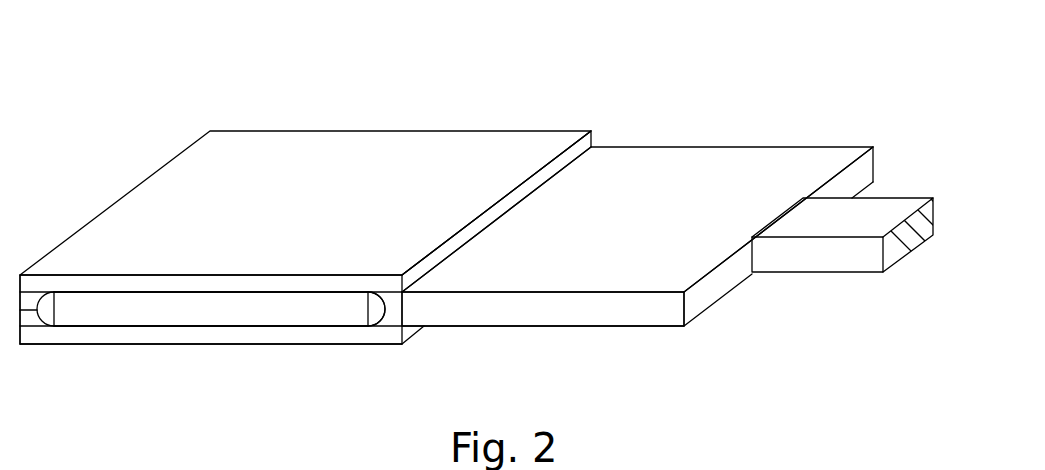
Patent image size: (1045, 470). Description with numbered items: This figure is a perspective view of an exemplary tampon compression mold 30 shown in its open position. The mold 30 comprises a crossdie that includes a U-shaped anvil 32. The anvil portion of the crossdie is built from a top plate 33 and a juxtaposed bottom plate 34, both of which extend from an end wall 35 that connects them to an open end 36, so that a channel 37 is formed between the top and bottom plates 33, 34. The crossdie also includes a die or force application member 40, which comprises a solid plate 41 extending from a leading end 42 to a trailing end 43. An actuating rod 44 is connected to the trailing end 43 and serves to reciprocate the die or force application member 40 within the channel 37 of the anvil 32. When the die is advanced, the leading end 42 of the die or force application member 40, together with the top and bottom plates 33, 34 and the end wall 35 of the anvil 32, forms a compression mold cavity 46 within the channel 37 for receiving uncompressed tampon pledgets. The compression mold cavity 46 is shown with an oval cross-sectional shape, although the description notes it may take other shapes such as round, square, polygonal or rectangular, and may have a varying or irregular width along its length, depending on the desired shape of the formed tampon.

The tampon compression mold 30 is at (596, 89).
The U-shaped anvil 32 is at (190, 139).
The top plate 33 is at (190, 293).
The bottom plate 34 is at (157, 327).
The end wall 35 is at (33, 329).
The open end 36 is at (491, 230).
The channel 37 is at (130, 311).
The die or force application member 40 is at (764, 142).
The solid plate 41 is at (625, 268).
The leading end 42 is at (378, 312).
The trailing end 43 is at (860, 173).
The actuating rod 44 is at (817, 273).
The compression mold cavity 46 is at (212, 309).